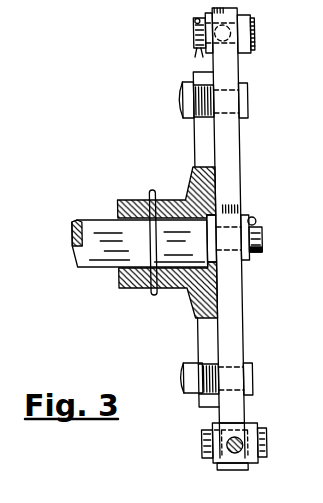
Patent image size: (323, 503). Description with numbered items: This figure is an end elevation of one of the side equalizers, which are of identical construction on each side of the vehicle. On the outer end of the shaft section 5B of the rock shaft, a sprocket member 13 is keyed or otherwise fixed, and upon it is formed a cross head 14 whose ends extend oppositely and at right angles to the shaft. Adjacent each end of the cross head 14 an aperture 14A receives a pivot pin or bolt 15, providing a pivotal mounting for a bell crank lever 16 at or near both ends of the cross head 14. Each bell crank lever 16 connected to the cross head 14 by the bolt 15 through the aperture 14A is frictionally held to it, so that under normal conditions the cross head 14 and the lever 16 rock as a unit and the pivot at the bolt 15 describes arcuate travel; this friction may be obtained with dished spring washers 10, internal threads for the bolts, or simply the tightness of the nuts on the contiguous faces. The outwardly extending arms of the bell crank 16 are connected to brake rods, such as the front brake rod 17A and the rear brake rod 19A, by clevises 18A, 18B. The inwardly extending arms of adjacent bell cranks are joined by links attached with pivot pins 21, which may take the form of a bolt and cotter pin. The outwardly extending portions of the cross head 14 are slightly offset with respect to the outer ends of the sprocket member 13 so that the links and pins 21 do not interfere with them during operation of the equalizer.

The shaft section 5B is at (85, 265).
The dished spring washers 10 is at (238, 498).
The sprocket member 13 is at (128, 288).
The cross head 14 is at (194, 155).
The aperture 14A is at (204, 367).
The pivot pin or bolt 15 is at (245, 105).
The bell crank lever 16 is at (232, 170).
The front brake rod 17A is at (198, 37).
The clevis 18A is at (254, 440).
The clevis 18B is at (251, 33).
The rear brake rod 19A is at (223, 450).
The pivot pin 21 is at (261, 232).